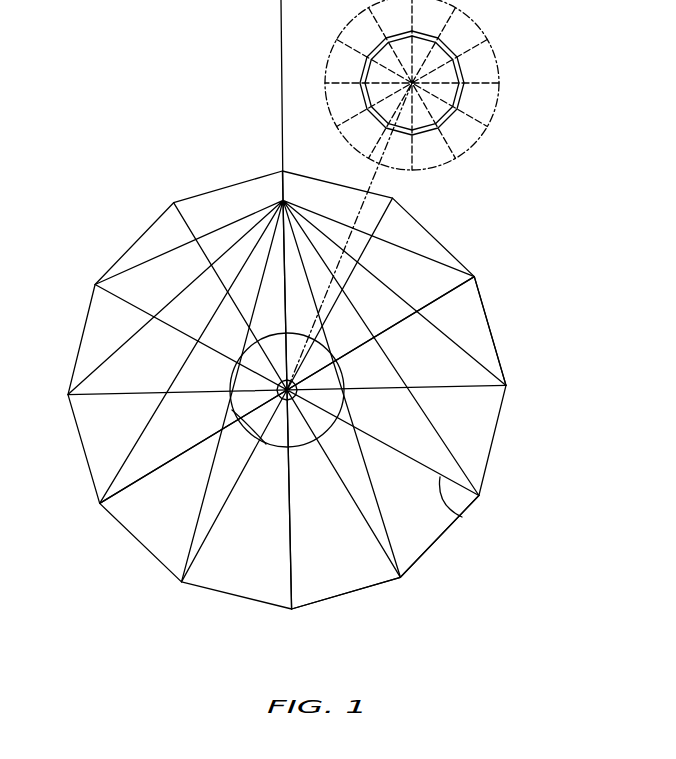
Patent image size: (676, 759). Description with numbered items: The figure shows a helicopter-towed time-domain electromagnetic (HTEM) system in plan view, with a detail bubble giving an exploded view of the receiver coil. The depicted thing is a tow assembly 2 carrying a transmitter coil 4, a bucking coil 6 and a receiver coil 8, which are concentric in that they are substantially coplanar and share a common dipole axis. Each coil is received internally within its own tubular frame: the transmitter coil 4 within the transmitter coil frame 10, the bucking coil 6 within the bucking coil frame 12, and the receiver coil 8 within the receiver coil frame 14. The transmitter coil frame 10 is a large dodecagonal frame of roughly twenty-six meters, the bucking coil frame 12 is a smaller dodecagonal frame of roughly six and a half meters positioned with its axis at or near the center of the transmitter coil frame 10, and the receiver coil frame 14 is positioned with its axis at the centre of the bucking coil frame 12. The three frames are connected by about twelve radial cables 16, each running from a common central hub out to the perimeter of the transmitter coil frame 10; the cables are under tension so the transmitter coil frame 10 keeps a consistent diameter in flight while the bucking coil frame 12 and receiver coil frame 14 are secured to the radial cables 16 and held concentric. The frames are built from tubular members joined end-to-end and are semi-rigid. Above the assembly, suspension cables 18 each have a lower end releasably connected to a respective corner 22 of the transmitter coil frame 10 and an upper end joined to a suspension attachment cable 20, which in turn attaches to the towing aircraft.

The tow assembly 2 is at (148, 112).
The transmitter coil 4 is at (81, 330).
The bucking coil 6 is at (265, 447).
The receiver coil 8 is at (462, 62).
The transmitter coil frame 10 is at (496, 343).
The bucking coil frame 12 is at (340, 410).
The receiver coil frame 14 is at (300, 447).
The radial cables 16 is at (462, 516).
The suspension cables 18 is at (433, 327).
The suspension attachment cable 20 is at (281, 103).
The corner 22 is at (401, 578).